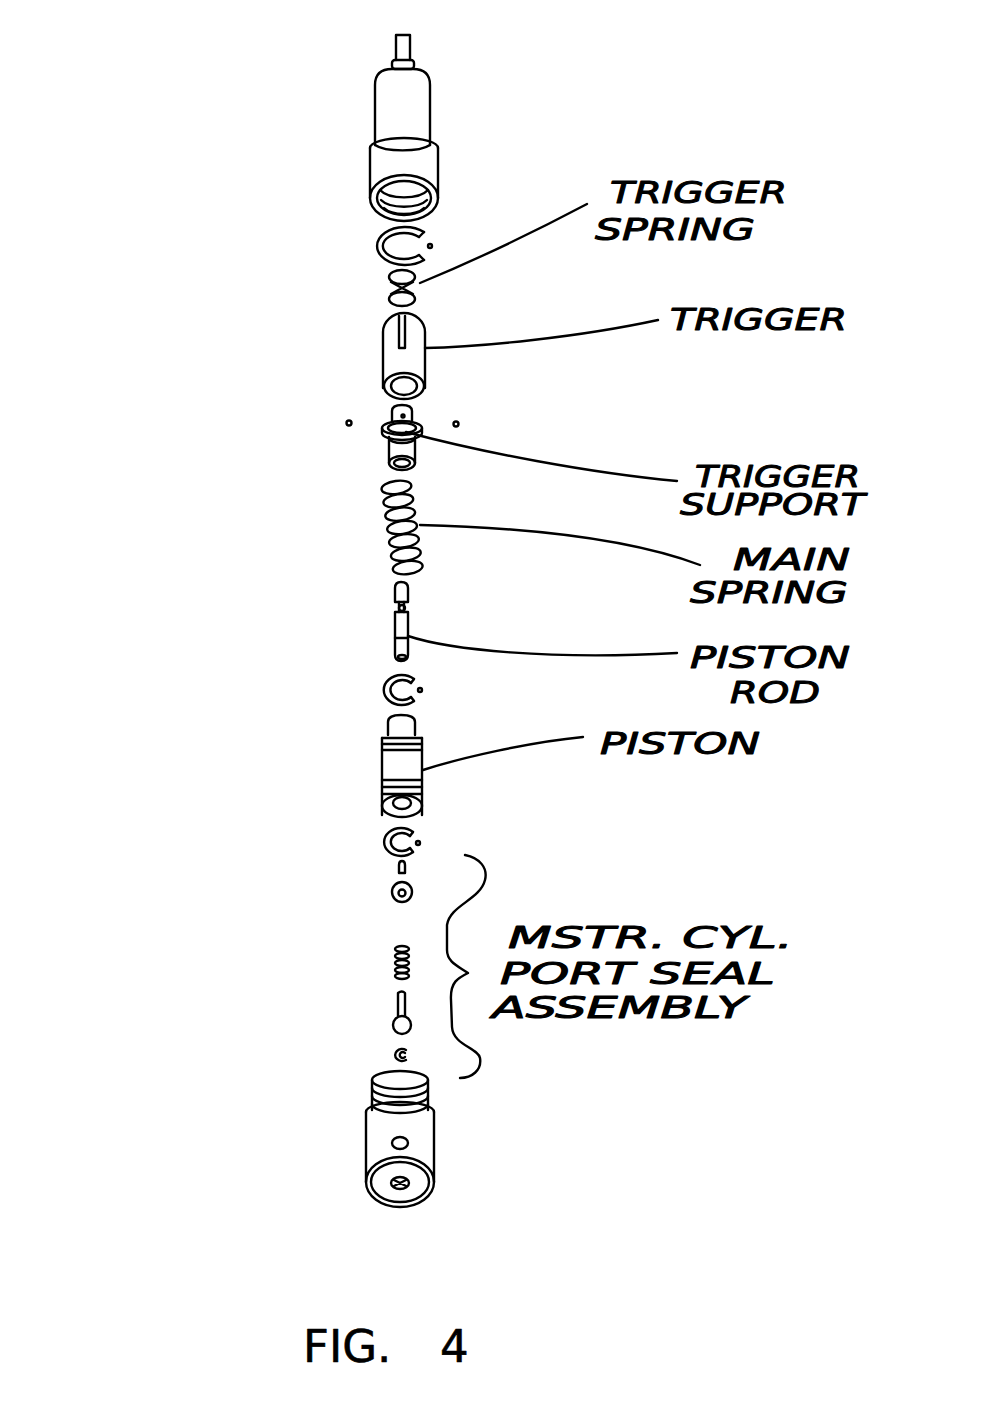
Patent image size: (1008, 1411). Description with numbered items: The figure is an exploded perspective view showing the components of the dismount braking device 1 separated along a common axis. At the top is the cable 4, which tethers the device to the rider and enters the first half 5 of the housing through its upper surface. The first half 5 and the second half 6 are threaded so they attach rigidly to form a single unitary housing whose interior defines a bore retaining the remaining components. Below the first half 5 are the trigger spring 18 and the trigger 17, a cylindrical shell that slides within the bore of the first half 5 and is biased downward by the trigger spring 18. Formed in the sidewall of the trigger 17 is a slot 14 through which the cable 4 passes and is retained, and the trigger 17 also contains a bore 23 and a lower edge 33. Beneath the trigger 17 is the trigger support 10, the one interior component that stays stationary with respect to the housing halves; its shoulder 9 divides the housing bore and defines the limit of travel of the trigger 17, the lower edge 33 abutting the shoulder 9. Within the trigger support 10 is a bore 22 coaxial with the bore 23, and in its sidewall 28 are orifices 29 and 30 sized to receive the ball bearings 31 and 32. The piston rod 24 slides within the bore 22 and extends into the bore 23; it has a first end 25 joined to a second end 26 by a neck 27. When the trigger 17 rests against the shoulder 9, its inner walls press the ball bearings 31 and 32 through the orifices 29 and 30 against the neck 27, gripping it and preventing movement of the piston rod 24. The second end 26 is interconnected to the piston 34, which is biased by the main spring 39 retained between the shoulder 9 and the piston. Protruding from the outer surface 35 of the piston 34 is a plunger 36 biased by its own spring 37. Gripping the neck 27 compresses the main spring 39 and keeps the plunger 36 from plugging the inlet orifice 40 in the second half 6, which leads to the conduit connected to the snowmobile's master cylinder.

The dismount braking device 1 is at (222, 501).
The cable 4 is at (410, 35).
The first half 5 is at (431, 115).
The second half 6 is at (407, 1159).
The shoulder 9 is at (393, 418).
The trigger support 10 is at (403, 443).
The slot 14 is at (405, 322).
The trigger 17 is at (397, 348).
The trigger spring 18 is at (388, 291).
The bore 22 is at (411, 463).
The bore 23 is at (412, 408).
The piston rod 24 is at (416, 630).
The first end 25 is at (408, 585).
The second end 26 is at (408, 660).
The neck 27 is at (405, 607).
The sidewall 28 is at (347, 422).
The orifice 29 is at (410, 423).
The orifice 30 is at (375, 430).
The ball bearing 31 is at (459, 424).
The ball bearing 32 is at (394, 417).
The lower edge 33 is at (410, 389).
The piston 34 is at (411, 768).
The outer surface 35 is at (415, 808).
The plunger 36 is at (393, 1030).
The spring 37 is at (393, 958).
The main spring 39 is at (386, 525).
The inlet orifice 40 is at (400, 1188).